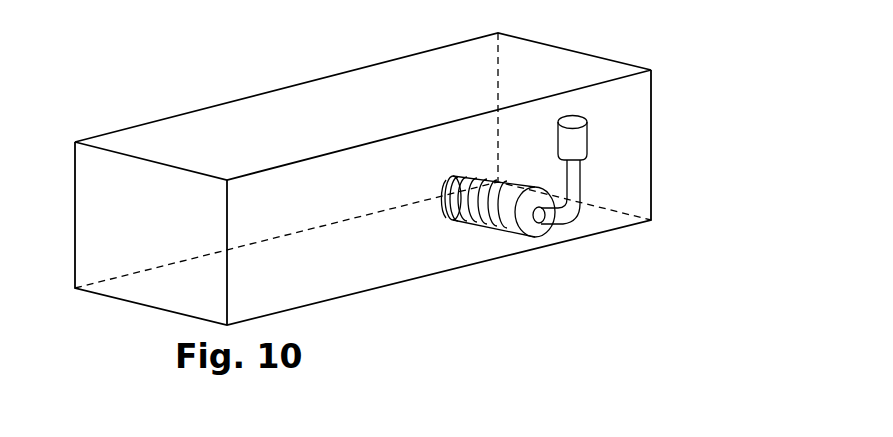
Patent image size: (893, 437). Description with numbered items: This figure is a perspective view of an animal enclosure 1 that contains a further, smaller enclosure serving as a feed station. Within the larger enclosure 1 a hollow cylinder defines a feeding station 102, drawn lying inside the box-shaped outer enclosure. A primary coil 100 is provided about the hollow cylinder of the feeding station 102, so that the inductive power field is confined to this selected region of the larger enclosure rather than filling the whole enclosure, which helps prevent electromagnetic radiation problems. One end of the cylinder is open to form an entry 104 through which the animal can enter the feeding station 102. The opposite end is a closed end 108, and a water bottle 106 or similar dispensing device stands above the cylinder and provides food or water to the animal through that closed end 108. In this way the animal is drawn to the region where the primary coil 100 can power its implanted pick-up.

The housing 1 is at (679, 87).
The primary coil 100 is at (466, 178).
The feeding station 102 is at (549, 232).
The entry 104 is at (442, 203).
The water bottle 106 is at (583, 138).
The closed end 108 is at (529, 231).